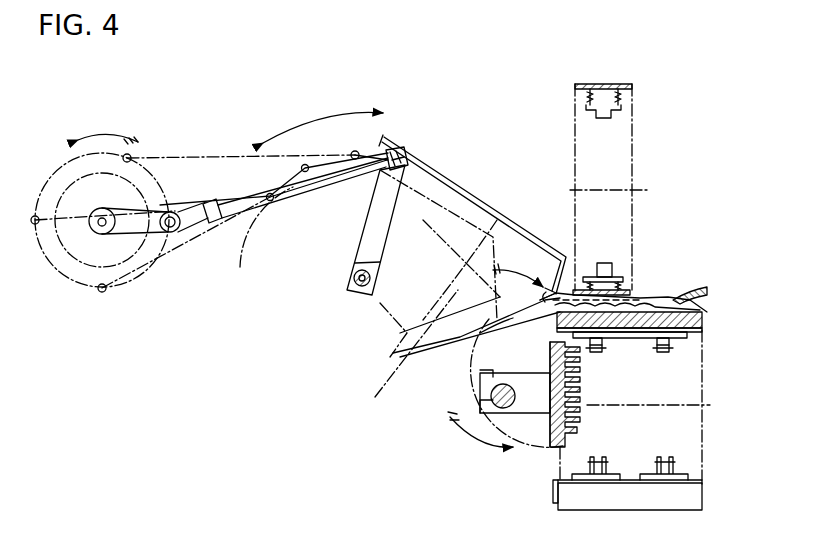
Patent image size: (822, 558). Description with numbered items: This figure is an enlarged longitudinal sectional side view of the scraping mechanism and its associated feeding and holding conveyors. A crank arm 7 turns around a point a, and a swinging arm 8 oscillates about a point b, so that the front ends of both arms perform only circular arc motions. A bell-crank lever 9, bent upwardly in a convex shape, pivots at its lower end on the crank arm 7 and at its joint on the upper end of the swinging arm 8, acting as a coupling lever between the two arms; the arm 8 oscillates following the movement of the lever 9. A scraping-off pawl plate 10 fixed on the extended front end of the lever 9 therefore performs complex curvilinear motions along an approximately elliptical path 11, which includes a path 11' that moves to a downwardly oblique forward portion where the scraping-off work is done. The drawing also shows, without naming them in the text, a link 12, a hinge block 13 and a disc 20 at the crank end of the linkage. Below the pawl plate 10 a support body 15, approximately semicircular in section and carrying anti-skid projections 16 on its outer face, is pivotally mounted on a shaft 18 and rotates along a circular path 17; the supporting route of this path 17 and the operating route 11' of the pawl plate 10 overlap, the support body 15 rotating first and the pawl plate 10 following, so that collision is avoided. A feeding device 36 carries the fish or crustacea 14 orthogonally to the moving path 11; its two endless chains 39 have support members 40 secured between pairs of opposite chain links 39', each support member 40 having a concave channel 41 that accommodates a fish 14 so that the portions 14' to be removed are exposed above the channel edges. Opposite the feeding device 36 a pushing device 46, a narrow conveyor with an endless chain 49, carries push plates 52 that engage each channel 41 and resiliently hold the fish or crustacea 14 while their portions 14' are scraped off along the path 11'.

The crank arm 7 is at (130, 225).
The swinging arm 8 is at (300, 188).
The bell-crank lever 9 is at (268, 200).
The scraping-off pawl plate 10 is at (518, 230).
The elliptical path 11 is at (445, 228).
The downwardly oblique forward path 11' is at (454, 355).
The lever 12 is at (365, 300).
The hinge 13 is at (407, 167).
The fish or crustacea 14 is at (644, 249).
The portions to be removed 14' is at (476, 329).
The support body 15 is at (557, 415).
The anti-skid projections 16 is at (572, 415).
The circular path 17 is at (447, 435).
The shaft 18 is at (488, 407).
The crank disc 20 is at (80, 190).
The feeding device 36 is at (683, 517).
The endless chains 39 is at (669, 362).
The chain links 39' is at (629, 376).
The support members 40 is at (702, 318).
The concave channel 41 is at (697, 287).
The pushing device 46 is at (643, 93).
The endless chain 49 is at (597, 250).
The push plate 52 is at (615, 272).
The point a is at (98, 228).
The point b is at (347, 292).